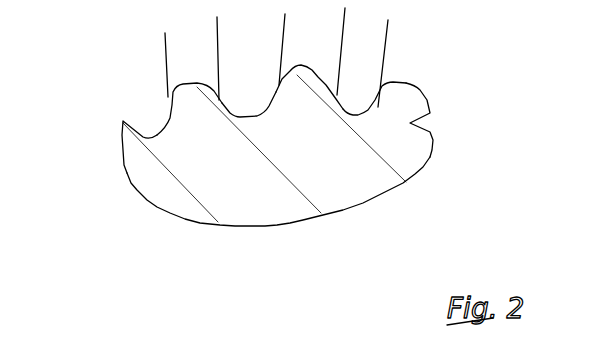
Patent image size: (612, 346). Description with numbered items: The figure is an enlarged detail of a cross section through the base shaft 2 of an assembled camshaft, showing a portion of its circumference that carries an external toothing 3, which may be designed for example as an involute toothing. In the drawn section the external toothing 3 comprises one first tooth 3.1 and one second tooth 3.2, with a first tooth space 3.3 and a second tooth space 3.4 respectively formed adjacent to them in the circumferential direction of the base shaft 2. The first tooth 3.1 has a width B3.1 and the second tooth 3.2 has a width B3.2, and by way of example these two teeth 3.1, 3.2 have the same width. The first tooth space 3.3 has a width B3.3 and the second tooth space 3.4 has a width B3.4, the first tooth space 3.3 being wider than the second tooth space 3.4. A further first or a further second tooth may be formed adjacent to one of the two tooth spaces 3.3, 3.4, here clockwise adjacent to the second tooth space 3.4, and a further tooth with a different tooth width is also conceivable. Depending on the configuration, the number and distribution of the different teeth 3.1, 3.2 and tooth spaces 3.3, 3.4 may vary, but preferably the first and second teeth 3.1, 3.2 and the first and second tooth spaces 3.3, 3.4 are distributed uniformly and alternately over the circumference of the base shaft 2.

The base shaft 2 is at (360, 189).
The external toothing 3 is at (290, 173).
The first tooth 3.1 is at (187, 108).
The second tooth 3.2 is at (316, 62).
The first tooth space 3.3 is at (233, 108).
The second tooth space 3.4 is at (358, 101).
The width of the first tooth B3.1 is at (218, 57).
The width of the second tooth B3.2 is at (340, 52).
The width of the first tooth space B3.3 is at (285, 51).
The width of the second tooth space B3.4 is at (390, 50).